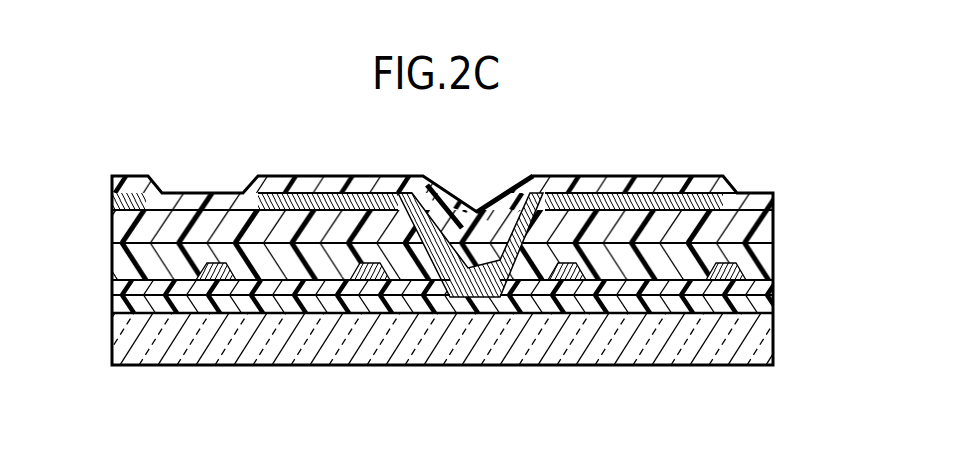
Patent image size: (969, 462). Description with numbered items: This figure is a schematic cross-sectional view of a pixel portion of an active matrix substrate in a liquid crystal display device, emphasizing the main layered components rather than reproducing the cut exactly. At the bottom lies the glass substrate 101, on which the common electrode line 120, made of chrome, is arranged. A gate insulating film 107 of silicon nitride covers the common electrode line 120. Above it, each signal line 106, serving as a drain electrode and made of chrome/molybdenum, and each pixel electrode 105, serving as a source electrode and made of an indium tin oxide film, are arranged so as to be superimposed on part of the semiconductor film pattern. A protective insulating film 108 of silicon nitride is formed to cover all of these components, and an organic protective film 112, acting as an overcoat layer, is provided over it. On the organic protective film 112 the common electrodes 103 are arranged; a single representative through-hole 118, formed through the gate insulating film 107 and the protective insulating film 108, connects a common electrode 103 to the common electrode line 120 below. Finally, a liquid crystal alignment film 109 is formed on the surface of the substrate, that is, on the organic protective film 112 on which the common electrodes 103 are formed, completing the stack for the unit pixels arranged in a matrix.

The glass substrate 101 is at (240, 346).
The common electrode 103 is at (303, 207).
The pixel electrode 105 is at (560, 305).
The signal line 106 is at (212, 264).
The gate insulating film 107 is at (763, 289).
The protective insulating film 108 is at (666, 256).
The liquid crystal alignment film 109 is at (135, 184).
The organic protective film 112 is at (763, 227).
The through-hole 118 is at (417, 168).
The common electrode line 120 is at (632, 305).